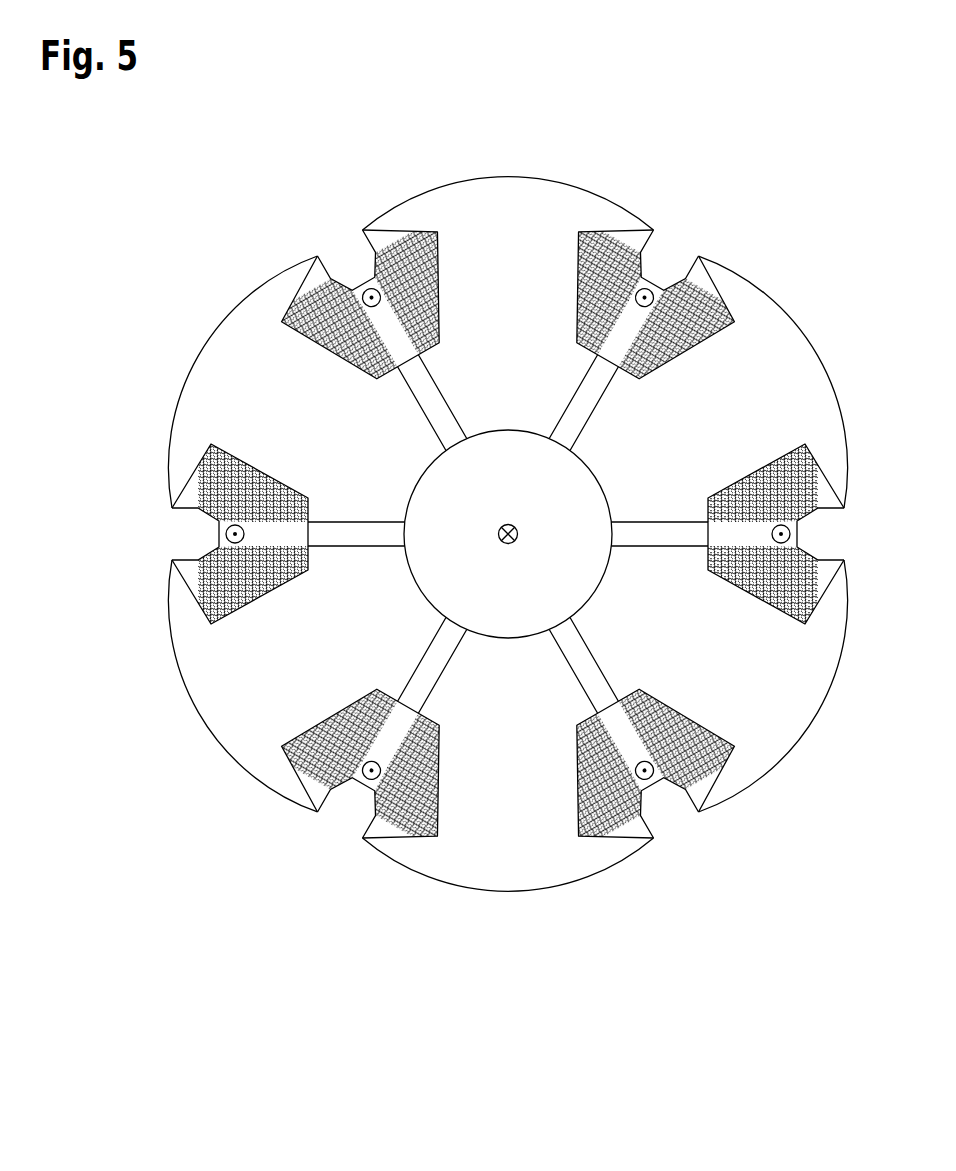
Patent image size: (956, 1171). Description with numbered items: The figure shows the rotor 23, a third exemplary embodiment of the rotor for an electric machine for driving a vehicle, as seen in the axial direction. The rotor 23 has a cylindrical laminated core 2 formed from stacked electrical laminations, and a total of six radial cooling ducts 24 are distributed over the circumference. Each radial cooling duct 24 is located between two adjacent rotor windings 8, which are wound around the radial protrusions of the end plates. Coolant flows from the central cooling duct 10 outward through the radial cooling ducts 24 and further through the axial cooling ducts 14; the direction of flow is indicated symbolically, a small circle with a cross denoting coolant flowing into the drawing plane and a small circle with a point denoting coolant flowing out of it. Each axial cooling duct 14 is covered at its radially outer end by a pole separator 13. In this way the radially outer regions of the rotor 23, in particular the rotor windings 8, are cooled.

The laminated core 2 is at (260, 702).
The rotor windings 8 is at (330, 783).
The central cooling duct 10 is at (525, 605).
The pole separator 13 is at (343, 258).
The axial cooling ducts 14 is at (383, 328).
The rotor 23 is at (193, 896).
The radial cooling ducts 24 is at (420, 652).